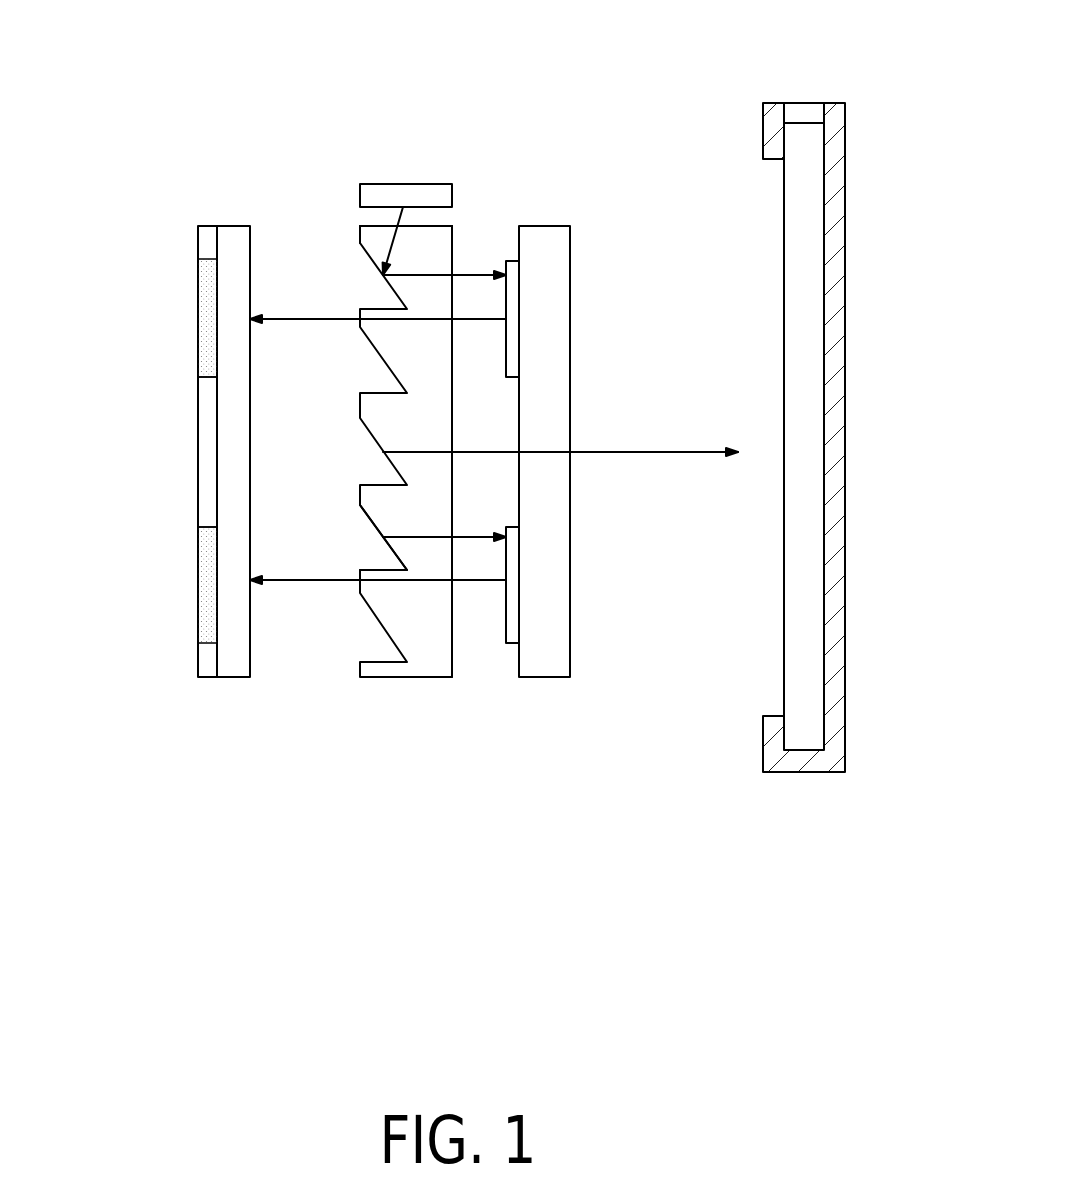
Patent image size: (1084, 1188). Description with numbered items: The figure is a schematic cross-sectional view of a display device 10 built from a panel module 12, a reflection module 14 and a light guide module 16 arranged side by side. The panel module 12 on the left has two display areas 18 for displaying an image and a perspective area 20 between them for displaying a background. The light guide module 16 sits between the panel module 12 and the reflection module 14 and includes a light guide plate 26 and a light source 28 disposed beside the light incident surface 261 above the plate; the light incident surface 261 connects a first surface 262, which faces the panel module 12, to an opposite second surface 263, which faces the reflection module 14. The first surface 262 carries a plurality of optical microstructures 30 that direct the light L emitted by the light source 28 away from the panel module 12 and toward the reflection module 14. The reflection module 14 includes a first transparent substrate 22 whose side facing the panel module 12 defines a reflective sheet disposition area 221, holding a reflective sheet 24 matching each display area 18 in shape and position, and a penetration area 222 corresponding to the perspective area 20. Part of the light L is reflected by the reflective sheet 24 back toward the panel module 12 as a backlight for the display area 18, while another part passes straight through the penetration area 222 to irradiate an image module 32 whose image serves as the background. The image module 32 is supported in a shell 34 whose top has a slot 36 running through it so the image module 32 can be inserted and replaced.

The display device 10 is at (113, 77).
The panel module 12 is at (182, 547).
The reflection module 14 is at (593, 499).
The light guide module 16 is at (363, 482).
The display area 18 is at (203, 313).
The perspective area 20 is at (203, 452).
The first transparent substrate 22 is at (545, 226).
The reflective sheet 24 is at (513, 350).
The light guide plate 26 is at (435, 663).
The light source 28 is at (405, 193).
The optical microstructures 30 is at (365, 527).
The image module 32 is at (805, 272).
The shell 34 is at (831, 200).
The slot 36 is at (810, 105).
The light L is at (382, 243).
The reflective sheet disposition area 221 is at (520, 290).
The penetration area 222 is at (520, 483).
The light incident surface 261 is at (372, 226).
The first surface 262 is at (360, 237).
The second surface 263 is at (453, 242).